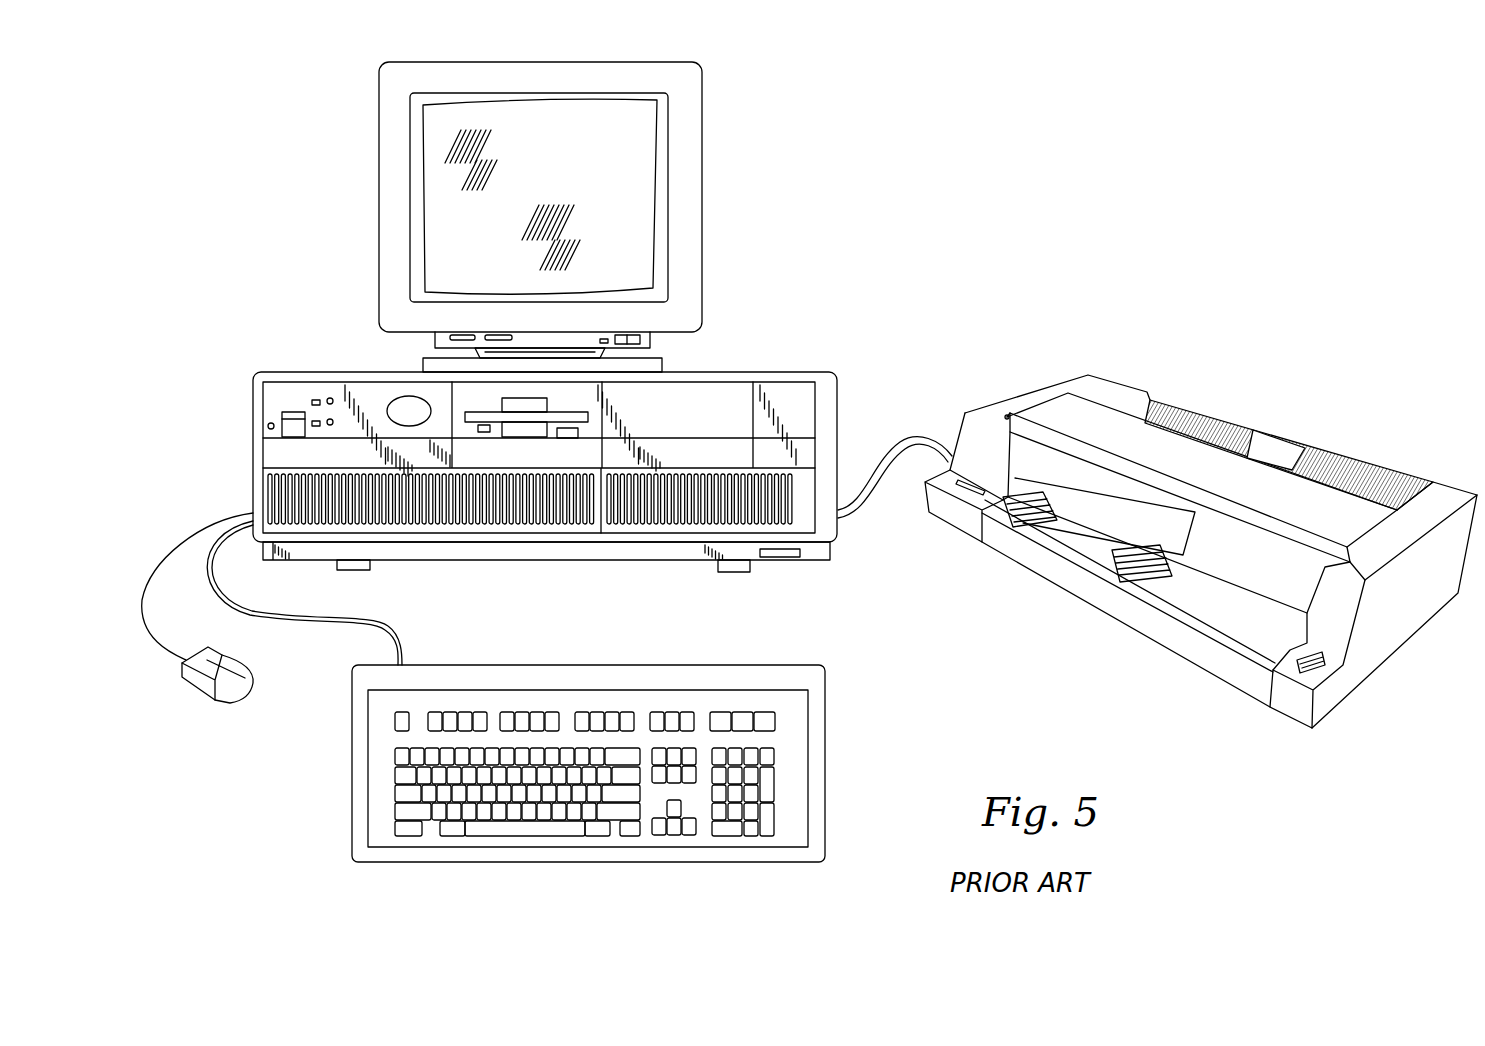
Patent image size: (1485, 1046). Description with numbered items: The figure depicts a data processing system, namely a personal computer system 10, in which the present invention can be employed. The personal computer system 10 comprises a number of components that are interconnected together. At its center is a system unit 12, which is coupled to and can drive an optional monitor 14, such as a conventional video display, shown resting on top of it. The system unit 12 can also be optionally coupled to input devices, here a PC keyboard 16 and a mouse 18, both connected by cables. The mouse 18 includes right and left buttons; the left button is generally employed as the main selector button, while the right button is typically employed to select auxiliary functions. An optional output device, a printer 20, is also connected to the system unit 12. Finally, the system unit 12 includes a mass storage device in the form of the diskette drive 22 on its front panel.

The personal computer system 10 is at (918, 188).
The system unit 12 is at (602, 453).
The monitor 14 is at (714, 228).
The PC keyboard 16 is at (701, 652).
The mouse 18 is at (200, 684).
The printer 20 is at (1024, 378).
The diskette drive 22 is at (533, 426).